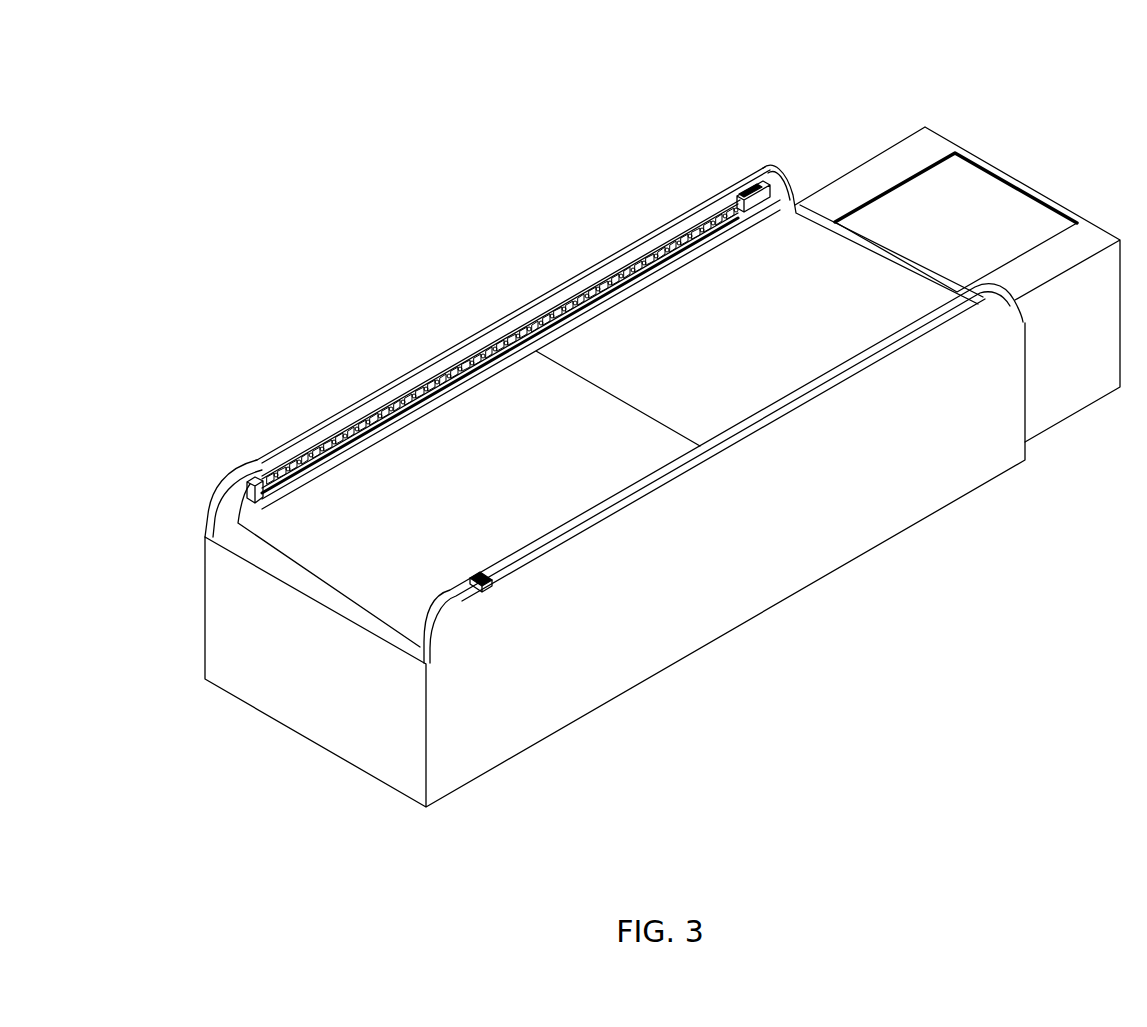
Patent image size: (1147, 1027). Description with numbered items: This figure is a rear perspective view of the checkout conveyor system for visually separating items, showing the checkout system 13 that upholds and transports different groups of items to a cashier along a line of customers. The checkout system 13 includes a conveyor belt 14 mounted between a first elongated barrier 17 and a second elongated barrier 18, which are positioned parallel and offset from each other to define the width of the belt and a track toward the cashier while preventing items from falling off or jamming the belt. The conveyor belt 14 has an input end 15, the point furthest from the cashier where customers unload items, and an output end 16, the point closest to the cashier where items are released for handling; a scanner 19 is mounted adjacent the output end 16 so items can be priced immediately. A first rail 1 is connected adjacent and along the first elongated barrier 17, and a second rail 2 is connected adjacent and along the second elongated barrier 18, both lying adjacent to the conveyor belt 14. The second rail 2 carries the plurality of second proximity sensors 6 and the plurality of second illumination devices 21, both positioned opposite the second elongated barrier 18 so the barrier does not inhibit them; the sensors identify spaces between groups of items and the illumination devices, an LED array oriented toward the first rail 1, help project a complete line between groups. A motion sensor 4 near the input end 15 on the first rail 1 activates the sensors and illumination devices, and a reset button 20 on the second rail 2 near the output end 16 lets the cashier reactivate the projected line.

The first rail 1 is at (846, 367).
The second rail 2 is at (722, 206).
The motion sensor 4 is at (480, 576).
The plurality of second proximity sensors 6 is at (655, 253).
The checkout system 13 is at (908, 120).
The conveyor belt 14 is at (348, 475).
The input end 15 is at (296, 557).
The output end 16 is at (793, 218).
The first elongated barrier 17 is at (433, 623).
The second elongated barrier 18 is at (210, 512).
The scanner 19 is at (967, 162).
The reset button 20 is at (747, 187).
The plurality of second illumination devices 21 is at (677, 243).